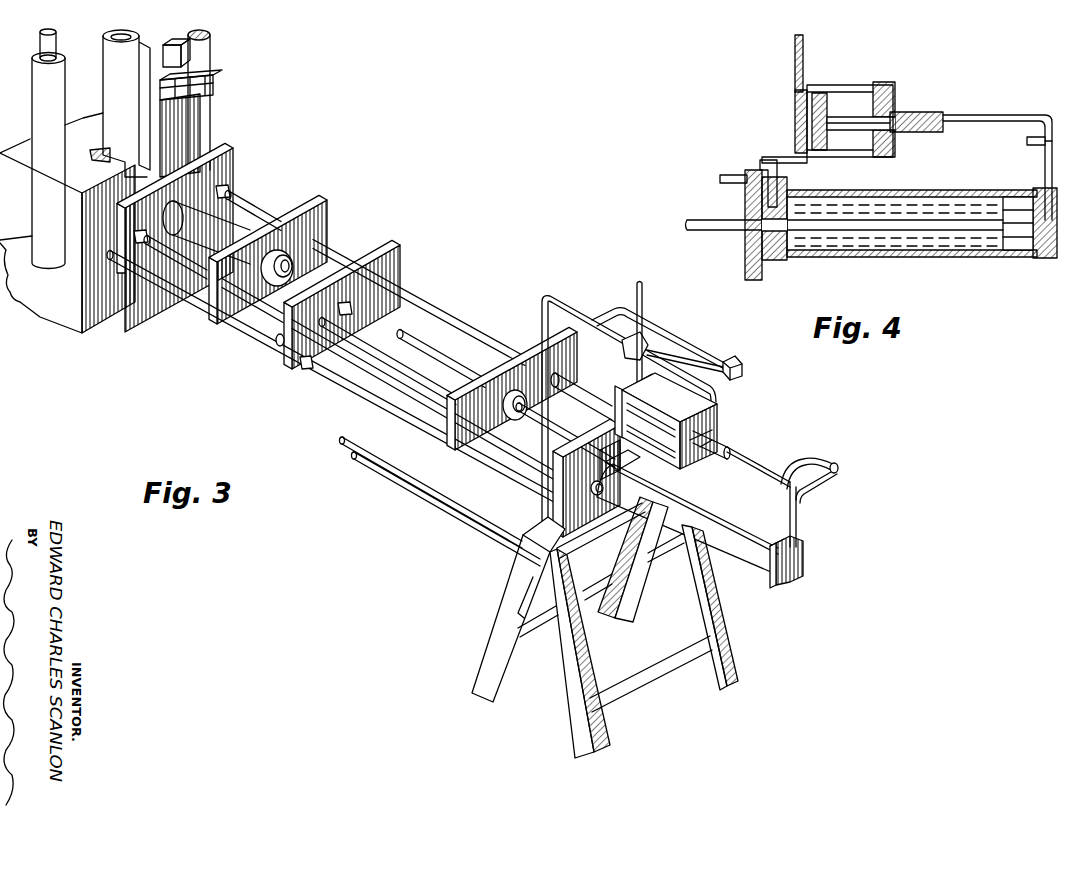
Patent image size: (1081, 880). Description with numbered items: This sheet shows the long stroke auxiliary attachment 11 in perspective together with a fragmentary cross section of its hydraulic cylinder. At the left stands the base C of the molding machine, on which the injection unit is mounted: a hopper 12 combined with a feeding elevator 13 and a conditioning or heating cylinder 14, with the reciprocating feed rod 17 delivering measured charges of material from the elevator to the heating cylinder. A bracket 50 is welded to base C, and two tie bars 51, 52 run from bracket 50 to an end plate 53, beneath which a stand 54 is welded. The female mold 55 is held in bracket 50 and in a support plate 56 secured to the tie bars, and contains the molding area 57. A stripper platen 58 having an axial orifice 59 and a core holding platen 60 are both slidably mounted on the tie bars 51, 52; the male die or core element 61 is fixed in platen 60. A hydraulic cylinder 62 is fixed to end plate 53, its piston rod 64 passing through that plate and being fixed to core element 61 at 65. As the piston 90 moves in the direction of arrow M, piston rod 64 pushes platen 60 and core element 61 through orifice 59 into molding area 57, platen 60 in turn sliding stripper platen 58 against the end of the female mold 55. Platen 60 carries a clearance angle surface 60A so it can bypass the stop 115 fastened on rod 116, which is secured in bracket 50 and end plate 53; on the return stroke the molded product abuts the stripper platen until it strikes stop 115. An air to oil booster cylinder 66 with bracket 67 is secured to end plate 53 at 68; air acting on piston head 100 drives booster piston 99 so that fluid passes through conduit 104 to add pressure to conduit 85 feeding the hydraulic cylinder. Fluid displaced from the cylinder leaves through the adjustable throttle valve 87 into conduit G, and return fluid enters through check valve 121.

In FIG. 3, the long stroke auxiliary attachment 11 is at (460, 231).
In FIG. 3, the hopper 12 is at (207, 92).
In FIG. 3, the feeding elevator 13 is at (193, 119).
In FIG. 3, the conditioning or heating cylinder 14 is at (112, 127).
In FIG. 3, the reciprocating feed rod 17 is at (173, 55).
In FIG. 3, the bracket 50 is at (240, 160).
In FIG. 3, the tie bar 51 is at (433, 304).
In FIG. 3, the tie bar 52 is at (355, 374).
In FIG. 3, the end plate 53 is at (568, 516).
In FIG. 4, the end plate 53 is at (764, 273).
In FIG. 3, the stand 54 is at (478, 672).
In FIG. 3, the female mold 55 is at (222, 235).
In FIG. 3, the support plate 56 is at (333, 206).
In FIG. 3, the molding area 57 is at (335, 240).
In FIG. 3, the stripper platen 58 is at (276, 341).
In FIG. 3, the axial orifice 59 is at (360, 334).
In FIG. 3, the core holding platen 60 is at (537, 358).
In FIG. 3, the clearance angle surface 60A is at (470, 458).
In FIG. 3, the male die or core element 61 is at (453, 365).
In FIG. 3, the hydraulic cylinder 62 is at (754, 537).
In FIG. 4, the hydraulic cylinder 62 is at (975, 256).
In FIG. 3, the piston rod 64 is at (562, 432).
In FIG. 4, the piston rod 64 is at (697, 213).
In FIG. 3, the fixing point 65 is at (577, 395).
In FIG. 3, the air to oil booster cylinder 66 is at (706, 397).
In FIG. 4, the air to oil booster cylinder 66 is at (850, 84).
In FIG. 3, the bracket 67 is at (625, 392).
In FIG. 4, the bracket 67 is at (795, 126).
In FIG. 3, the securing point 68 is at (570, 448).
In FIG. 4, the securing point 68 is at (780, 170).
In FIG. 3, the conduit 85 is at (848, 474).
In FIG. 4, the conduit 85 is at (1024, 142).
In FIG. 3, the adjustable throttle valve 87 is at (621, 350).
In FIG. 4, the piston 90 is at (1012, 202).
In FIG. 4, the booster piston 99 is at (840, 125).
In FIG. 4, the piston head 100 is at (818, 94).
In FIG. 3, the conduit 104 is at (753, 462).
In FIG. 4, the conduit 104 is at (1035, 114).
In FIG. 3, the stop 115 is at (300, 368).
In FIG. 3, the rod 116 is at (195, 300).
In FIG. 3, the check valve 121 is at (742, 370).
In FIG. 3, the base C is at (46, 306).
In FIG. 3, the conduit G is at (555, 314).
In FIG. 4, the arrow indicating piston direction M is at (873, 181).